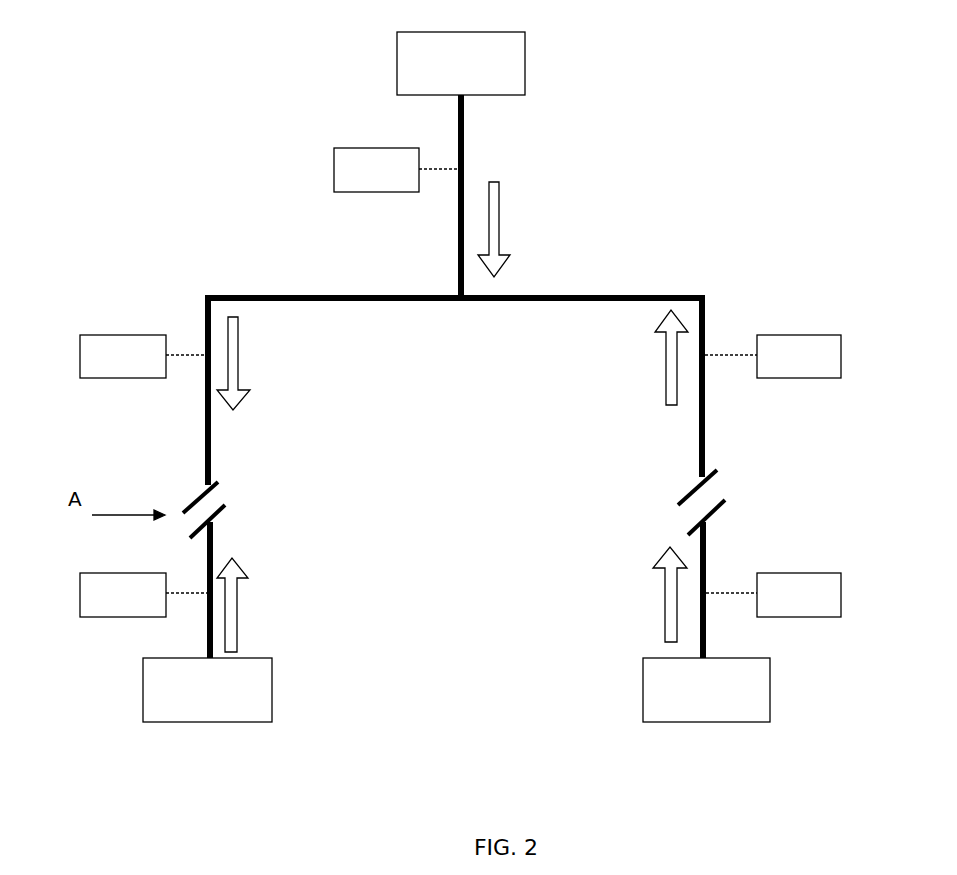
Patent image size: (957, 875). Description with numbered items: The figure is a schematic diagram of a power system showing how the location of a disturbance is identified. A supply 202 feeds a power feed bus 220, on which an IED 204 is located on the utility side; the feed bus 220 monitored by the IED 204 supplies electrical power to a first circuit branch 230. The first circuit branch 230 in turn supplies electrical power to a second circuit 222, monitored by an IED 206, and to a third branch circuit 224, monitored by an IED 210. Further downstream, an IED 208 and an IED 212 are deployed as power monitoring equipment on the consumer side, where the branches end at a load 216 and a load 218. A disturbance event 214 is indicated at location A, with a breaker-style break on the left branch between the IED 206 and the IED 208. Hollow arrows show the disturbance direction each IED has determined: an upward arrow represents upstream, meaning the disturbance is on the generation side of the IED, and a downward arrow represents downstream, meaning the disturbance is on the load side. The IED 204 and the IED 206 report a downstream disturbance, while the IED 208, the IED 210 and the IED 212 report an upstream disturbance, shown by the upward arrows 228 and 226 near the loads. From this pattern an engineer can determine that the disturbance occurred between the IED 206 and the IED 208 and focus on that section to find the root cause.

The supply 202 is at (461, 49).
The IED 204 is at (396, 156).
The IED 206 is at (142, 343).
The IED 208 is at (143, 582).
The IED 210 is at (773, 343).
The IED 212 is at (773, 582).
The disturbance event 214 is at (454, 504).
The load 216 is at (207, 706).
The load 218 is at (706, 706).
The power feed bus 220 is at (462, 146).
The second circuit 222 is at (335, 298).
The third branch circuit 224 is at (580, 298).
The current flow arrow 226 is at (703, 567).
The current flow arrow 228 is at (215, 558).
The first circuit branch 230 is at (462, 195).